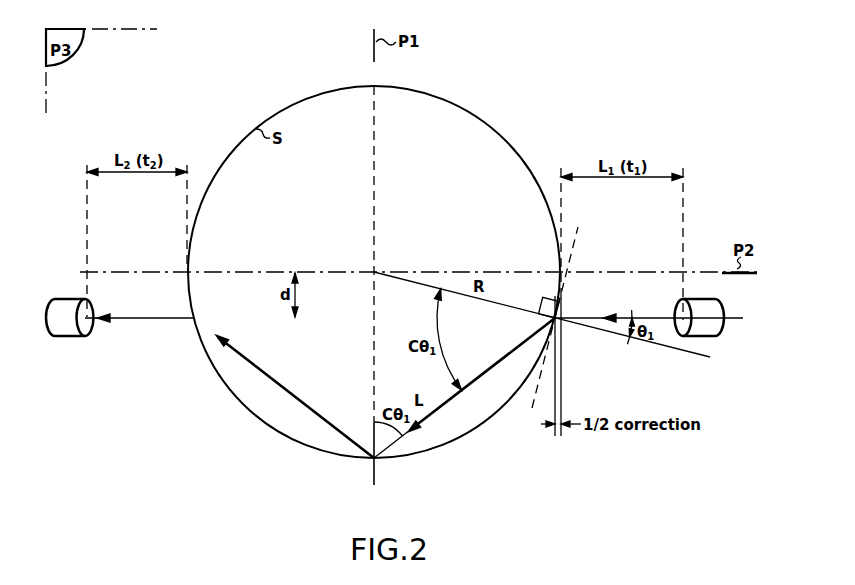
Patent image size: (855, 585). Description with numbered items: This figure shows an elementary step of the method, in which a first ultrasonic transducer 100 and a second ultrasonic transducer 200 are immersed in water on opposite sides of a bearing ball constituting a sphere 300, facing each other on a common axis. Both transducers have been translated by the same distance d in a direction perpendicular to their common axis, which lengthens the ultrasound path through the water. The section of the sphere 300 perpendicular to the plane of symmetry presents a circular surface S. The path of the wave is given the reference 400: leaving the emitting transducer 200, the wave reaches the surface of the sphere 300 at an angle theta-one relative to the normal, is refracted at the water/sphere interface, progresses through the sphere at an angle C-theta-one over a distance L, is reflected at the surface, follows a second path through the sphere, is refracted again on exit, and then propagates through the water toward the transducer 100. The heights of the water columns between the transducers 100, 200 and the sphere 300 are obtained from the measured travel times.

The first ultrasonic transducer 100 is at (70, 336).
The second ultrasonic transducer 200 is at (722, 330).
The sphere 300 is at (470, 113).
The path of a wave 400 is at (396, 458).